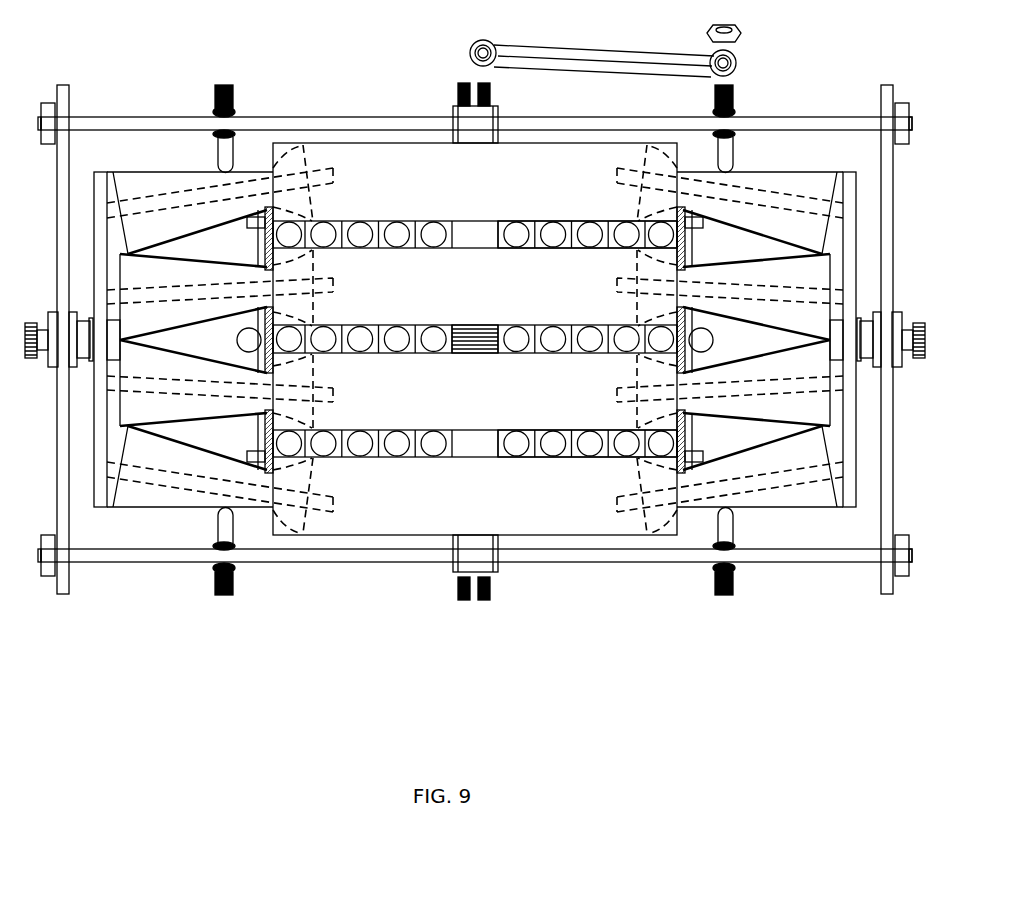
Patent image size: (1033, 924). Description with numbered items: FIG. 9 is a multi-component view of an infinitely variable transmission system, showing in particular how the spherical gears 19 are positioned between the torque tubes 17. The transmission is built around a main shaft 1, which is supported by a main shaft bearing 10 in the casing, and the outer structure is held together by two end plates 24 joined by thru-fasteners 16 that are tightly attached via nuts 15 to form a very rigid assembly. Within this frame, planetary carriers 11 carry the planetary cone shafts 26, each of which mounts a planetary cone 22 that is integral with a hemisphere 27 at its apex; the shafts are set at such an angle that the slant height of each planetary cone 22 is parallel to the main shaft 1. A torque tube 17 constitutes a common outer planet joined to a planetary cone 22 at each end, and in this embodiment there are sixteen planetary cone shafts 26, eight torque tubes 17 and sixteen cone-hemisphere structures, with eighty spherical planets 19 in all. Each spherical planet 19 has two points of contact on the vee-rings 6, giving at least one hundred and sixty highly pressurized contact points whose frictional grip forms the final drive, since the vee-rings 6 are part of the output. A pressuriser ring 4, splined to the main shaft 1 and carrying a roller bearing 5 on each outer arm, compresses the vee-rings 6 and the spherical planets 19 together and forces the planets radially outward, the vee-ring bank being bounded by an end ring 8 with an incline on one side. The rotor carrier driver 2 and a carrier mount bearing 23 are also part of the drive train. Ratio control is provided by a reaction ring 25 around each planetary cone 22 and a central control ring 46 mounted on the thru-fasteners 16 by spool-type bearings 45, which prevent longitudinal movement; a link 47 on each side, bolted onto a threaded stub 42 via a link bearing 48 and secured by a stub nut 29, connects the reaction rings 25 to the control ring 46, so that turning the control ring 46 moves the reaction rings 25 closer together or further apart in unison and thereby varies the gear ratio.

The main shaft 1 is at (40, 358).
The rotor carrier driver 2 is at (478, 230).
The pressuriser ring 4 is at (250, 222).
The roller bearing 5 is at (258, 222).
The vee-ring 6 is at (418, 222).
The end ring 8 is at (452, 222).
The main shaft bearing 10 is at (52, 367).
The planetary carrier 11 is at (850, 180).
The nut 15 is at (48, 108).
The thru-fastener 16 is at (765, 118).
The torque tube 17 is at (358, 162).
The spherical planet 19 is at (587, 222).
The planetary cone 22 is at (153, 180).
The carrier mount bearing 23 is at (90, 318).
The end plate 24 is at (68, 580).
The reaction ring 25 is at (225, 87).
The planetary cone shaft 26 is at (113, 205).
The hemisphere 27 is at (300, 160).
The stub nut 29 is at (742, 33).
The threaded stub 42 is at (463, 83).
The spool-type bearing 45 is at (468, 118).
The control ring 46 is at (490, 580).
The link 47 is at (610, 58).
The link bearing 48 is at (738, 63).